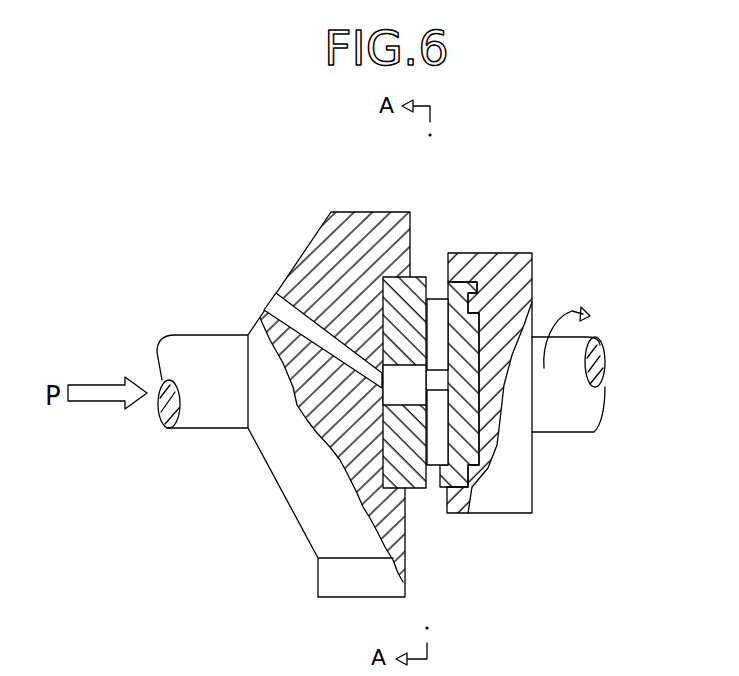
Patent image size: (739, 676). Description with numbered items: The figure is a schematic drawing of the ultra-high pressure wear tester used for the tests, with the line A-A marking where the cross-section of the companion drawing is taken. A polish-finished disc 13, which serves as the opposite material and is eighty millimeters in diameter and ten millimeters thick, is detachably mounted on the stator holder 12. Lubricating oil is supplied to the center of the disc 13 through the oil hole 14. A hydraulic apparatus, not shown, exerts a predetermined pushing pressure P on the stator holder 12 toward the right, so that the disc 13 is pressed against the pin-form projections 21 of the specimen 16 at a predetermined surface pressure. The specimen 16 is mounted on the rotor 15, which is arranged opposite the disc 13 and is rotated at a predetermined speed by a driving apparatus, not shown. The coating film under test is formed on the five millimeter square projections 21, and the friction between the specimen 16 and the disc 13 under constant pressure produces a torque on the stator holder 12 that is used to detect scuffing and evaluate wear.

The stator holder 12 is at (316, 233).
The disc 13 is at (432, 280).
The oil hole 14 is at (276, 296).
The rotor 15 is at (532, 268).
The specimen 16 is at (440, 488).
The pin-form projections 21 is at (446, 284).